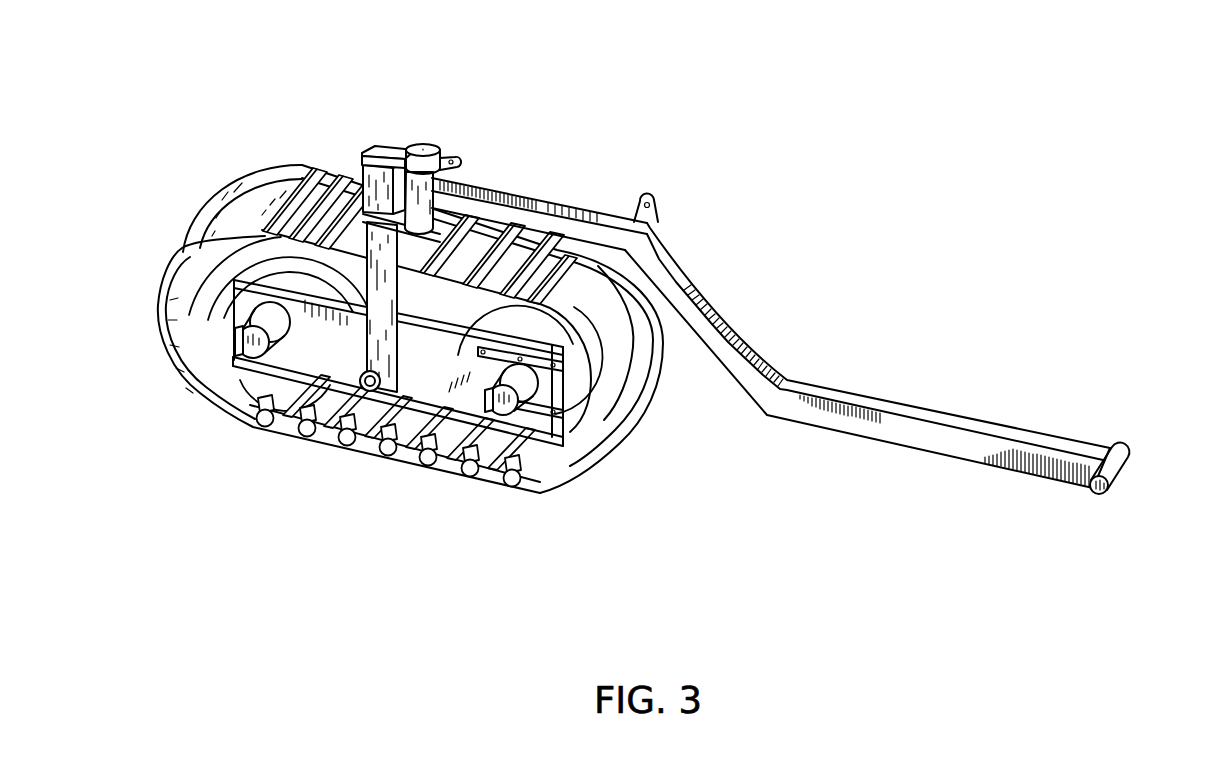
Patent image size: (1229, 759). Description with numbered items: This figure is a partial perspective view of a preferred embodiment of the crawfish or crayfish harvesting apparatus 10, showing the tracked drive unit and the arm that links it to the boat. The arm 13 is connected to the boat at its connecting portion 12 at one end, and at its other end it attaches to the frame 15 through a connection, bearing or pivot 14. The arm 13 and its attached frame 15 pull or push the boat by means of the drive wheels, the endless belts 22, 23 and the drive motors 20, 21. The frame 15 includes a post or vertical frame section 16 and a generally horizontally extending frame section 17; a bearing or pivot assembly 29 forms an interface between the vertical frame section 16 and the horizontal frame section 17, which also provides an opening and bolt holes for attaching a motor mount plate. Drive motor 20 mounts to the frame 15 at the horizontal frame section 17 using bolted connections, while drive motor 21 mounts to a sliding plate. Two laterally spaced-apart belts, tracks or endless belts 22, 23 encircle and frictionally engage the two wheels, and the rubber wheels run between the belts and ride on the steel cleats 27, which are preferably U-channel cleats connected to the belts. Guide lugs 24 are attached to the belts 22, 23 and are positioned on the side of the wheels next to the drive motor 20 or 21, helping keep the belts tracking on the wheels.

The crawfish harvesting apparatus 10 is at (840, 124).
The connecting portion 12 is at (1125, 445).
The arm 13 is at (772, 358).
The pivot 14 is at (433, 145).
The frame 15 is at (378, 145).
The vertical frame section 16 is at (365, 342).
The horizontally extending frame section 17 is at (245, 286).
The drive motor 20 is at (238, 318).
The drive motor 21 is at (538, 383).
The endless belt 22 is at (232, 405).
The endless belt 23 is at (268, 170).
The guide lug 24 is at (407, 475).
The cleats 27 is at (305, 168).
The pivot assembly 29 is at (382, 380).